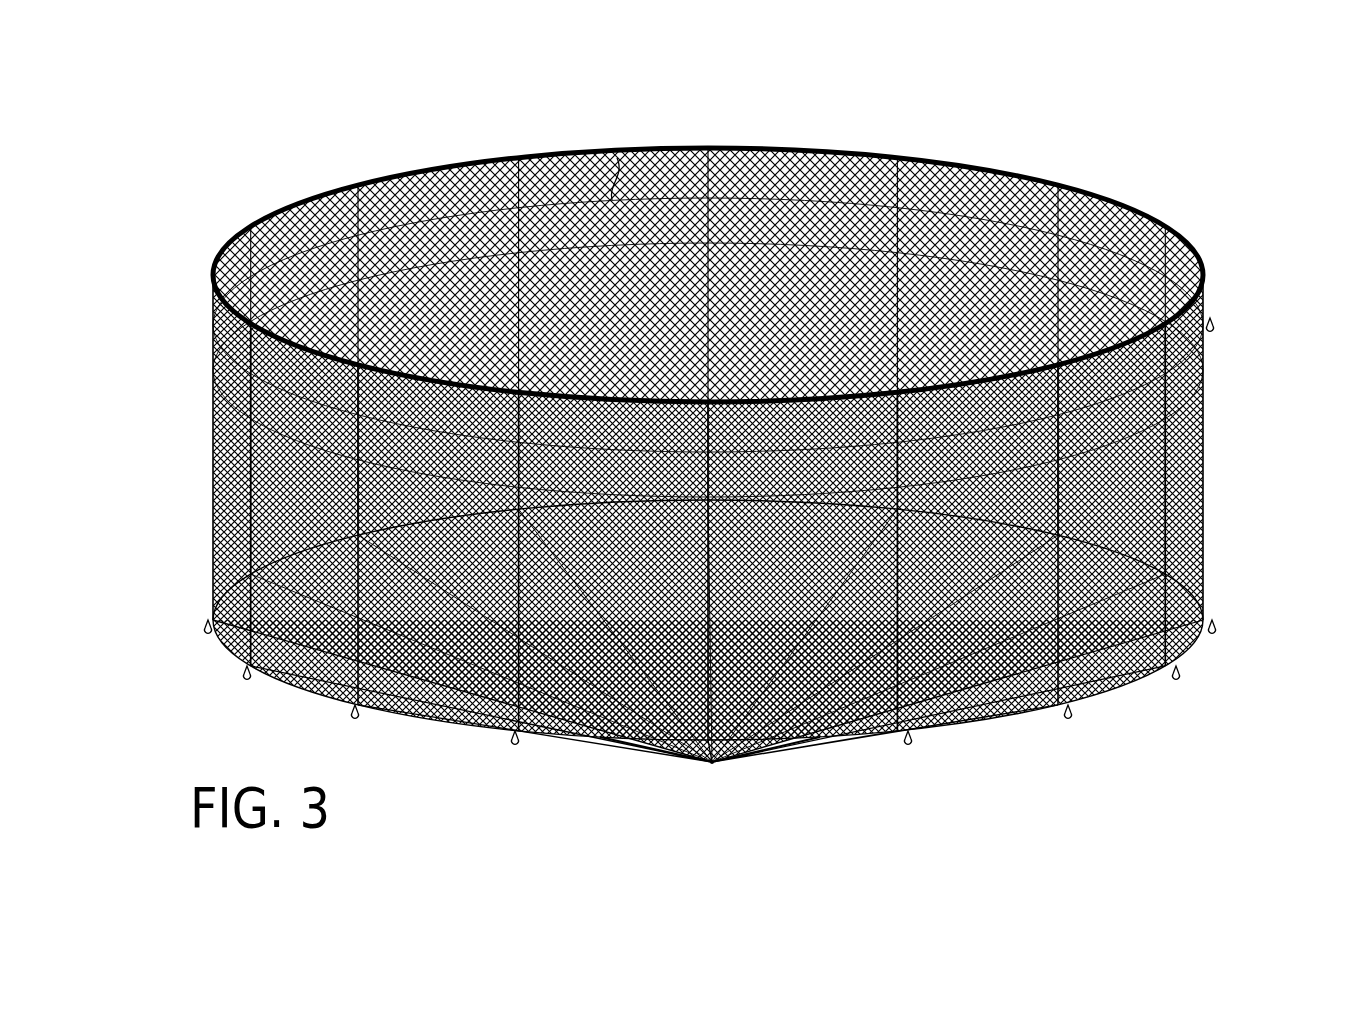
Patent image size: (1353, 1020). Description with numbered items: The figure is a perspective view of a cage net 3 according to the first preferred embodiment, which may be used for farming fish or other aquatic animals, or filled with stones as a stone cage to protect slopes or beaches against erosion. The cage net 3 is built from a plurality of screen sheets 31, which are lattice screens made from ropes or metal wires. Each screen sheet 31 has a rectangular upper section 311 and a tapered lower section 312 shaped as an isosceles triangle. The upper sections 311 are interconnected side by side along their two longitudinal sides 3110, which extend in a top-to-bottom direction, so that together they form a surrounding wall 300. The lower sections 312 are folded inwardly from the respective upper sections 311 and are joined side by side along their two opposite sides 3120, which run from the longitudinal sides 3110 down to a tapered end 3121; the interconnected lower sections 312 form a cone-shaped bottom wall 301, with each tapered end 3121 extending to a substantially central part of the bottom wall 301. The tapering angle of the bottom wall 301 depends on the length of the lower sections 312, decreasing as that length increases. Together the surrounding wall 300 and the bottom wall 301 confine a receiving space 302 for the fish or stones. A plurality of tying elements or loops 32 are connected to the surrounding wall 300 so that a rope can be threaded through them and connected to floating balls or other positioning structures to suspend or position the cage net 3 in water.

The cage net 3 is at (228, 196).
The screen sheets 31 is at (404, 166).
The upper section 311 is at (455, 165).
The longitudinal sides 3110 is at (718, 148).
The receiving space 302 is at (614, 152).
The surrounding wall 300 is at (213, 490).
The tying elements or loops 32 is at (1222, 320).
The opposite sides 3120 is at (1127, 680).
The lower section 312 is at (982, 717).
The bottom wall 301 is at (548, 740).
The tapered end 3121 is at (720, 765).